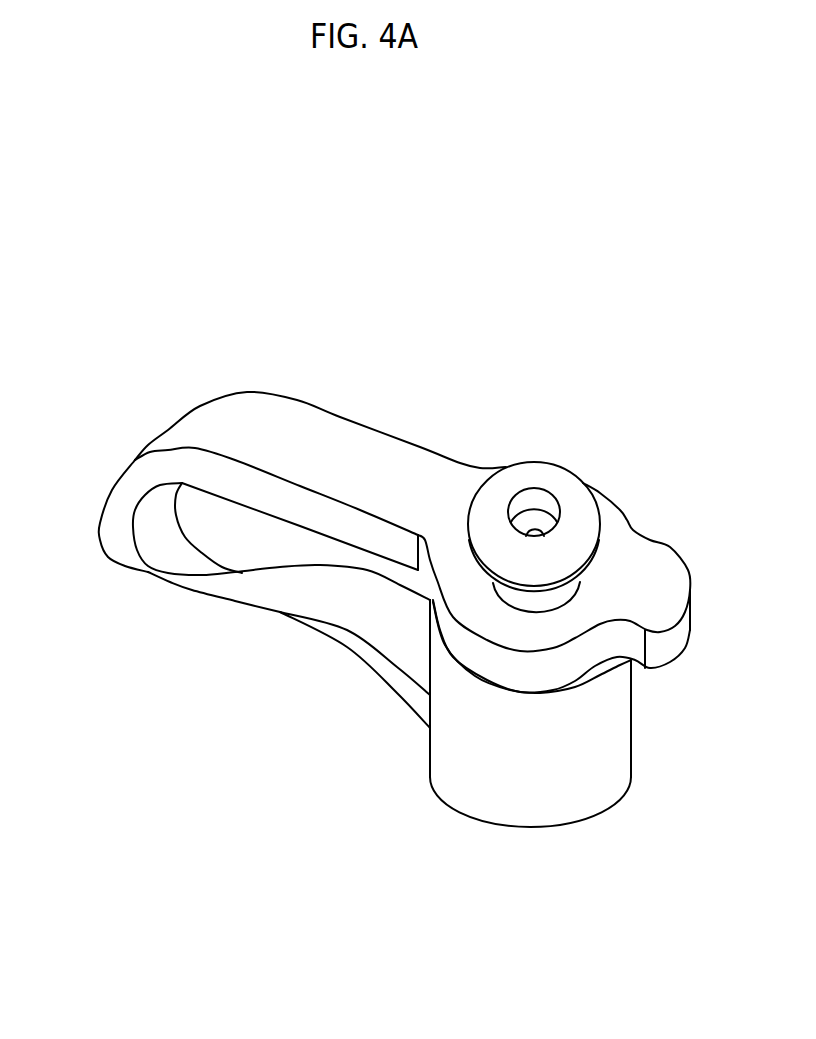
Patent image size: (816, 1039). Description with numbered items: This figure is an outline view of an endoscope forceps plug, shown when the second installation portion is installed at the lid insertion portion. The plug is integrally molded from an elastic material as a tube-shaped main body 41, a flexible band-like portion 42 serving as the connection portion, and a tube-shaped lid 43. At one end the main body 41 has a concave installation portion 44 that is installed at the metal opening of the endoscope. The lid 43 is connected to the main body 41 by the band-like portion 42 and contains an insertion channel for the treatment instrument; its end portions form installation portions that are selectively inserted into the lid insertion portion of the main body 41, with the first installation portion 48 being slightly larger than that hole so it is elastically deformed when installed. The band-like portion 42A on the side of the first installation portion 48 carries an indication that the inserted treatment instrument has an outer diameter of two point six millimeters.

The main body 41 is at (633, 736).
The band-like portion 42 is at (106, 554).
The band-like portion 42A is at (318, 454).
The lid 43 is at (615, 513).
The installation portion 44 is at (503, 827).
The first installation portion 48 is at (553, 484).